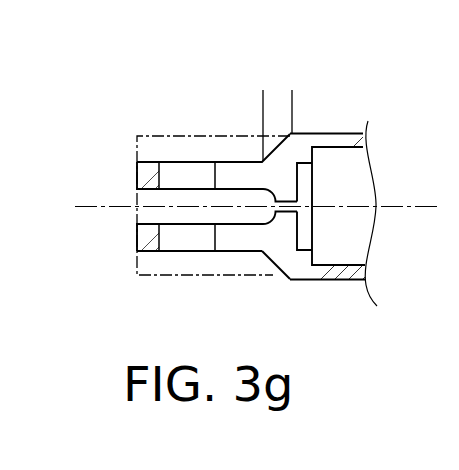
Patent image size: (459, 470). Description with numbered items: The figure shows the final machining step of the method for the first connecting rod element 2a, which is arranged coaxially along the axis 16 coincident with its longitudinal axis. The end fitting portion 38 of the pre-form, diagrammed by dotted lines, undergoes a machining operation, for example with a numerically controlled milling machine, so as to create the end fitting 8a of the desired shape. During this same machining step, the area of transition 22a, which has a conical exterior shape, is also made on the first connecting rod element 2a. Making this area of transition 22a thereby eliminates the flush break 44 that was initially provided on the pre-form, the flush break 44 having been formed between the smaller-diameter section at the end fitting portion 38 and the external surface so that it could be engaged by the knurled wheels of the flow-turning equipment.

The first connecting rod element 2a is at (348, 115).
The end fitting 8a is at (173, 137).
The axis 16 is at (93, 205).
The area of transition 22a is at (278, 98).
The end fitting portion 38 is at (148, 136).
The flush break 44 is at (280, 281).